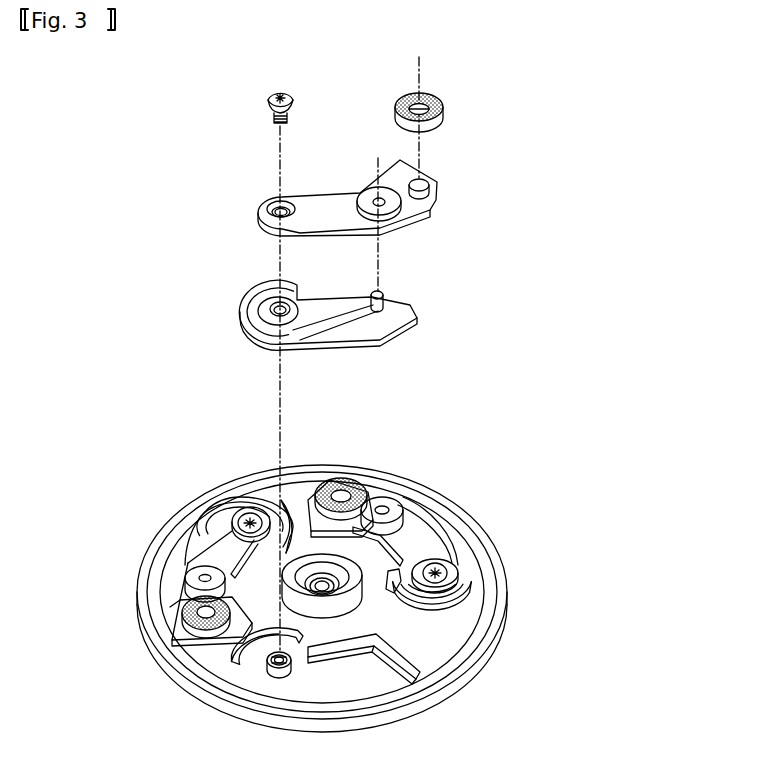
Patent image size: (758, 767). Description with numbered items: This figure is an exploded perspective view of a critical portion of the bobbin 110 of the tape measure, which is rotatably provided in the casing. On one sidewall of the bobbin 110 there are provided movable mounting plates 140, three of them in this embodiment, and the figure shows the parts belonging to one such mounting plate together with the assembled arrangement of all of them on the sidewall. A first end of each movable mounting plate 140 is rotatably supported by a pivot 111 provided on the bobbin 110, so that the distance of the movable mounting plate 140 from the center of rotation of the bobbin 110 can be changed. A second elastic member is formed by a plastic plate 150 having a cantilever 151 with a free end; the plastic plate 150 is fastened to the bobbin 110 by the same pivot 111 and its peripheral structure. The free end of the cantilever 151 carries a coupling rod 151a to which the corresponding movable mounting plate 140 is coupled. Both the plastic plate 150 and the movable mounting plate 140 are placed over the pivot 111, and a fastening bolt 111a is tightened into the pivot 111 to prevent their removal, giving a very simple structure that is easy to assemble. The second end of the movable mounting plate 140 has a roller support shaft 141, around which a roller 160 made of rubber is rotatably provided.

The bobbin 110 is at (438, 655).
The pivot 111 is at (278, 668).
The fastening bolt 111a is at (266, 98).
The movable mounting plate 140 is at (256, 212).
The roller support shaft 141 is at (430, 185).
The plastic plate 150 is at (242, 300).
The cantilever 151 is at (360, 320).
The coupling rod 151a is at (383, 296).
The roller 160 is at (443, 105).